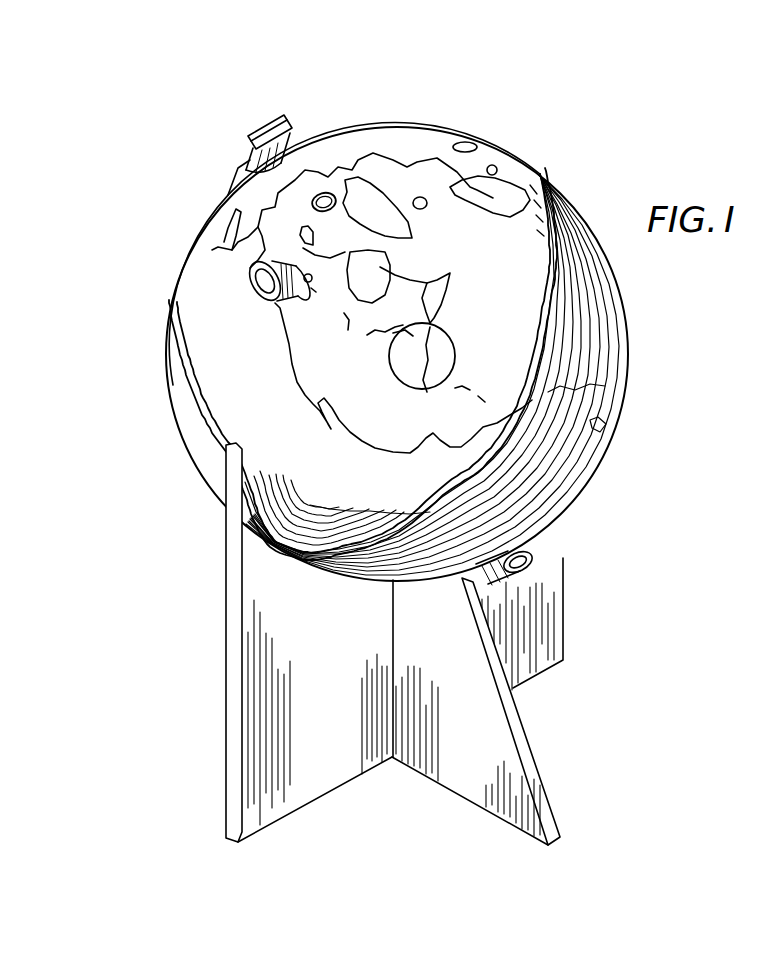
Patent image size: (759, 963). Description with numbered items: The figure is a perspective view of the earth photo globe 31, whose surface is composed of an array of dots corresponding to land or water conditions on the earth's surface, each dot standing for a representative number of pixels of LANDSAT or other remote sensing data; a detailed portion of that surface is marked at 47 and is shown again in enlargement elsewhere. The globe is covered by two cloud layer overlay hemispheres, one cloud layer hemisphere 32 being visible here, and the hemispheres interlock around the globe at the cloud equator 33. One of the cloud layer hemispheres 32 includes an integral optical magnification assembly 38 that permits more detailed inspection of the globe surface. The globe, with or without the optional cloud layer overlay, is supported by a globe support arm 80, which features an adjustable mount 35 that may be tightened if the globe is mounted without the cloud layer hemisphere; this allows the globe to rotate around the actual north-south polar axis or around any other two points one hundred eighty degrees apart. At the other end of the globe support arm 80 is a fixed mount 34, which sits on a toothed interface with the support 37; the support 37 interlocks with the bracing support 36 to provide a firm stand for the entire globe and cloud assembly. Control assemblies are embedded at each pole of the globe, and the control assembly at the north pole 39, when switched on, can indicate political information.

The earth photo globe 31 is at (370, 142).
The cloud layer overlay hemisphere 32 is at (455, 127).
The cloud equator 33 is at (560, 277).
The fixed mount 34 is at (530, 553).
The adjustable mount 35 is at (250, 137).
The bracing support 36 is at (328, 797).
The support 37 is at (530, 733).
The optical magnification assembly 38 is at (250, 273).
The control assembly at the north pole 39 is at (326, 194).
The detailed portion of the globe surface 47 is at (652, 356).
The globe support arm 80 is at (237, 169).